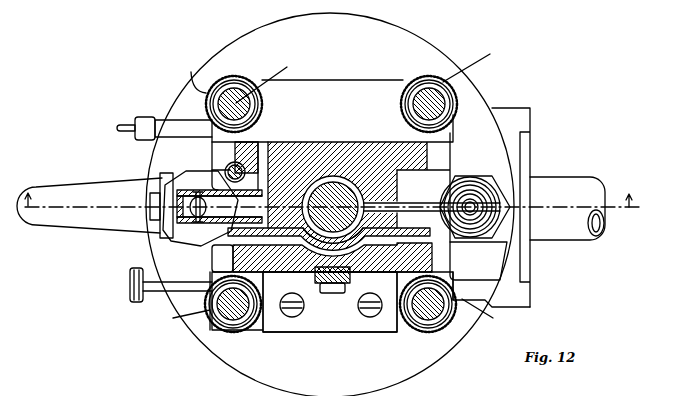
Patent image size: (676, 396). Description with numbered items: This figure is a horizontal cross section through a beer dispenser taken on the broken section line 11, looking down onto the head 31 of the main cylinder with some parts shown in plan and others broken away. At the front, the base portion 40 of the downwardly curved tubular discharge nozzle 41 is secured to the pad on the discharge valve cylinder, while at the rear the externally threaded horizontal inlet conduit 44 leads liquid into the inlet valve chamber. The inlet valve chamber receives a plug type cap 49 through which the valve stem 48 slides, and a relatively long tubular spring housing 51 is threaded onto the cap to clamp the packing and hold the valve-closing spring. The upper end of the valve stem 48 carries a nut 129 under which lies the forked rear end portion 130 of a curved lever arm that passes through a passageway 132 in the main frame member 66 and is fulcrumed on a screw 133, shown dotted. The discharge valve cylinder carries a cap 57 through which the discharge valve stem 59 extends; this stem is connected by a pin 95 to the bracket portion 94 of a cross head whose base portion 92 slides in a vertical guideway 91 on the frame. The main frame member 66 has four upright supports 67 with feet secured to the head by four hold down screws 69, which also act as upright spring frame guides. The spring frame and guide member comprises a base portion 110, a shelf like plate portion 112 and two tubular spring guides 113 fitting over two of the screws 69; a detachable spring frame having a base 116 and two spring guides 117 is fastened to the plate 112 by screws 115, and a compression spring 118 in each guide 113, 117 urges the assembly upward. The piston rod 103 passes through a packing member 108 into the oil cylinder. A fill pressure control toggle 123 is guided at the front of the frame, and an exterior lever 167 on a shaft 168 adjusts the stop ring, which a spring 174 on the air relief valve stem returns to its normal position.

The section line 11 is at (332, 209).
The head 31 is at (440, 60).
The base portion 40 is at (163, 182).
The discharge nozzle 41 is at (95, 188).
The inlet conduit 44 is at (579, 237).
The valve stem 48 is at (480, 206).
The plug type cap 49 is at (497, 190).
The spring housing 51 is at (497, 215).
The cap 57 is at (197, 239).
The valve stem 59 is at (167, 208).
The main frame member 66 is at (376, 163).
The upright supports 67 is at (222, 262).
The hold down screws 69 is at (240, 78).
The vertical guideway 91 is at (265, 143).
The base portion of cross head 92 is at (292, 143).
The bracket portion 94 is at (207, 182).
The pin 95 is at (250, 207).
The piston rod 103 is at (352, 170).
The packing member 108 is at (342, 190).
The base portion 110 is at (366, 82).
The shelf like plate portion 112 is at (319, 333).
The spring guides 113 is at (504, 97).
The screws 115 is at (366, 318).
The base 116 is at (260, 333).
The spring guides 117 is at (213, 326).
The compression spring 118 is at (332, 187).
The fill pressure control toggle 123 is at (228, 170).
The nut 129 is at (460, 183).
The forked rear end portion 130 is at (465, 190).
The passageway 132 is at (359, 273).
The screw 133 is at (331, 293).
The lever 167 is at (124, 126).
The shaft 168 is at (160, 120).
The spring 174 is at (150, 303).